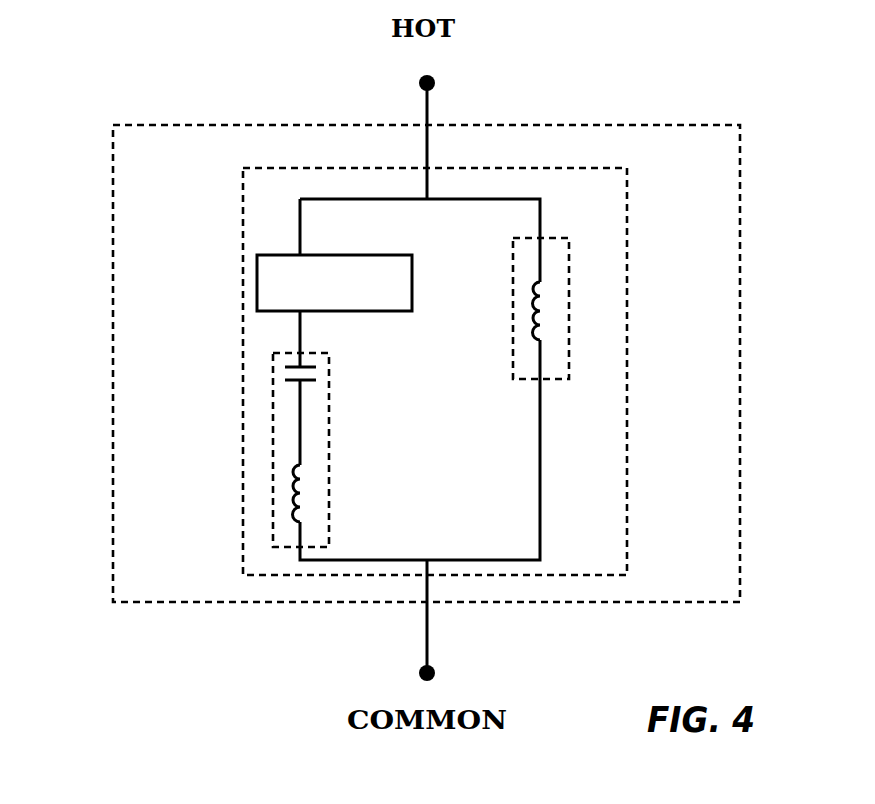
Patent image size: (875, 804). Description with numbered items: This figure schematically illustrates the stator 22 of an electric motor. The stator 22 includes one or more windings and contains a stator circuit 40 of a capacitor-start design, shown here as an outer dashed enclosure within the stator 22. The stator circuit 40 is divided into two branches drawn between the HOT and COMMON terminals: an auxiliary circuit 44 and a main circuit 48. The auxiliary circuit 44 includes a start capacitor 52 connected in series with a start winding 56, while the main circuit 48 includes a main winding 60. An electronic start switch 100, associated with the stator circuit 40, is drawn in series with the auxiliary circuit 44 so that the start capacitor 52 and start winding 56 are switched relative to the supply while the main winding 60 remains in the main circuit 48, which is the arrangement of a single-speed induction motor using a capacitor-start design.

The stator 22 is at (743, 248).
The stator circuit 40 is at (243, 243).
The auxiliary circuit 44 is at (330, 442).
The main circuit 48 is at (513, 257).
The start capacitor 52 is at (308, 366).
The start winding 56 is at (300, 493).
The main winding 60 is at (538, 318).
The electronic start switch 100 is at (330, 255).